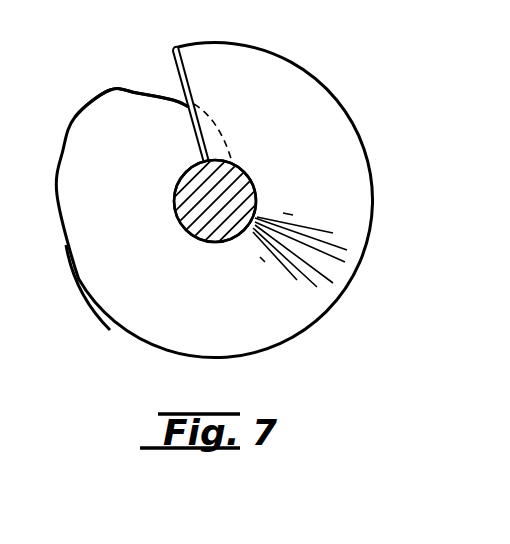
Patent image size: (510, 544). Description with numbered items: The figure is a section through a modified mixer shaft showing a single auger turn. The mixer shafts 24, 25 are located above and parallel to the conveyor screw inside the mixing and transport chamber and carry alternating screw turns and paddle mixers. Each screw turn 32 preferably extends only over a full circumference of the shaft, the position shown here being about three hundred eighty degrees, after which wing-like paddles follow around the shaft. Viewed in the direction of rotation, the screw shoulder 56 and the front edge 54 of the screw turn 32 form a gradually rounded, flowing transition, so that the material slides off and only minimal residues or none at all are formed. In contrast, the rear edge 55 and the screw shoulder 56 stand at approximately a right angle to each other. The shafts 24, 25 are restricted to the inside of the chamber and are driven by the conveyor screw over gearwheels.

The mixer shaft 24 is at (238, 190).
The mixer shaft 25 is at (238, 190).
The screw turn 32 is at (353, 194).
The front edge 54 is at (150, 91).
The rear edge 55 is at (173, 57).
The screw shoulder 56 is at (83, 290).